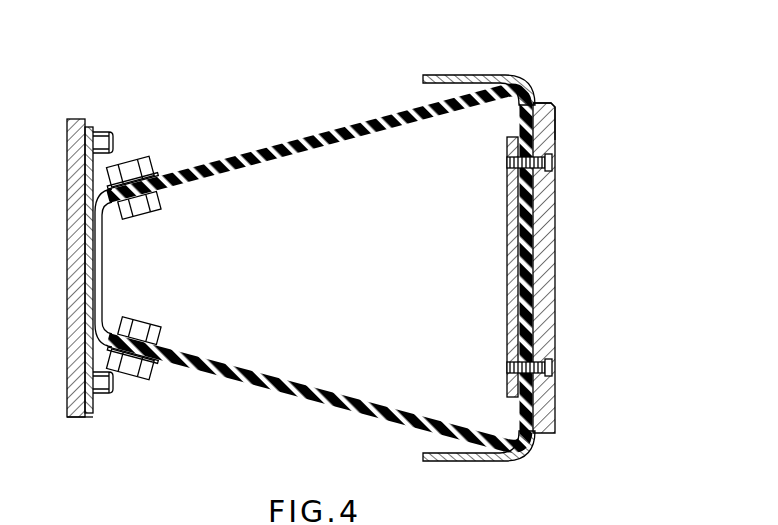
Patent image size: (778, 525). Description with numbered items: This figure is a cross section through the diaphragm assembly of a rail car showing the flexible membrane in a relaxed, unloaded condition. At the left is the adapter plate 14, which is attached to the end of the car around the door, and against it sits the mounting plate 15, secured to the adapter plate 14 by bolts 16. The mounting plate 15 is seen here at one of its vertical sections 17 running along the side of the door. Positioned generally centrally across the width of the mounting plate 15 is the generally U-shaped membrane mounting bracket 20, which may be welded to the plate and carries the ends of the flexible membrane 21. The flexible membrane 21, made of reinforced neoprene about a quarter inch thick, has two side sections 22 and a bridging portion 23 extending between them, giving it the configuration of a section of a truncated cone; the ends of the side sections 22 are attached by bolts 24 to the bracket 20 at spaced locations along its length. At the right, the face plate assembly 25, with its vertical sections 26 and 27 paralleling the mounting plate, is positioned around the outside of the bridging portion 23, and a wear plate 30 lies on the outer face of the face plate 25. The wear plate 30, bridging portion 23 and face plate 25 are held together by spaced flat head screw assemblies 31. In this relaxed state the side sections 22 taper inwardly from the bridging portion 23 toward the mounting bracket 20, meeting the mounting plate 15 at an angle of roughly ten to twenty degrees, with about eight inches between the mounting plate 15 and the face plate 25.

The adapter plate 14 is at (73, 118).
The mounting plate 15 is at (107, 430).
The bolts 16 is at (115, 145).
The vertical section 17 is at (90, 128).
The membrane mounting bracket 20 is at (165, 193).
The flexible membrane 21 is at (300, 130).
The side sections 22 is at (327, 142).
The bridging portion 23 is at (545, 262).
The bolts 24 is at (153, 162).
The face plate assembly 25 is at (545, 69).
The vertical section 26 is at (550, 135).
The vertical section 27 is at (571, 267).
The wear plate 30 is at (547, 405).
The flat head screw assemblies 31 is at (566, 167).